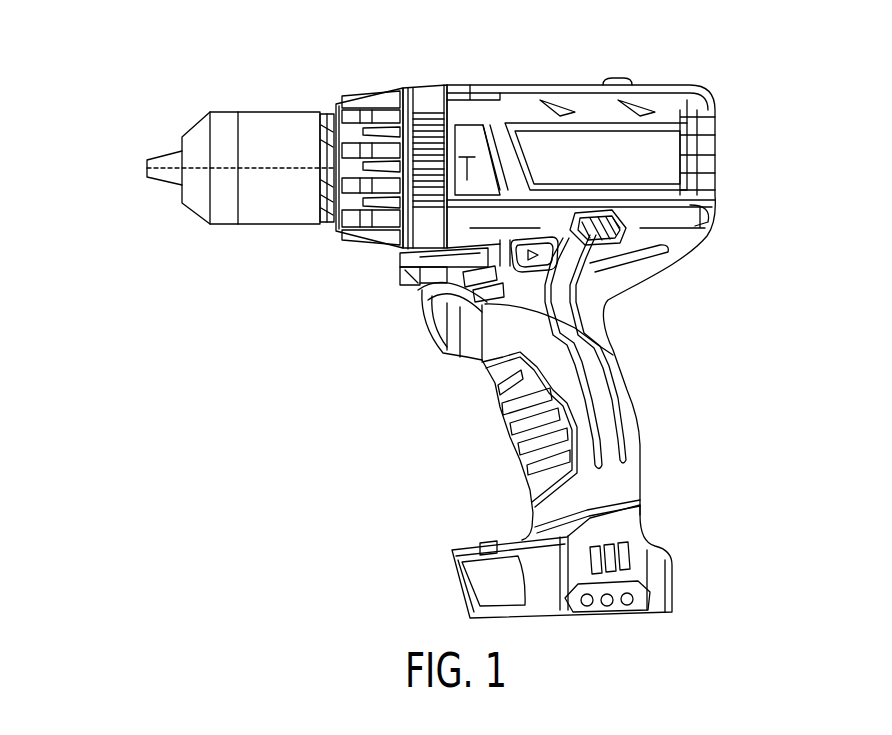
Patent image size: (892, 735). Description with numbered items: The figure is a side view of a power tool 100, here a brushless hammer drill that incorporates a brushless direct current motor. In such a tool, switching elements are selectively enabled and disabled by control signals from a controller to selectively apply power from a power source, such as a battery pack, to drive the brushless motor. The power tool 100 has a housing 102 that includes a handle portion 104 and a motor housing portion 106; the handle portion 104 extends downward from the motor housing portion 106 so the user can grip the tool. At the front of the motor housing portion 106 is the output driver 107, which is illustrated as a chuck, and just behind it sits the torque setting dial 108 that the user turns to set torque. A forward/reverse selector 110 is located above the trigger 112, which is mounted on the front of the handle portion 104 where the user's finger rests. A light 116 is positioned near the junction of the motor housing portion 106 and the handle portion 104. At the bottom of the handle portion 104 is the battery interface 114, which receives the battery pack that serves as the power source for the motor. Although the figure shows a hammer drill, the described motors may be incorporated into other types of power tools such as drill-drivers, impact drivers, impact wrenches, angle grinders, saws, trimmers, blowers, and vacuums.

The power tool 100 is at (120, 120).
The housing 102 is at (605, 232).
The handle portion 104 is at (668, 428).
The motor housing portion 106 is at (738, 130).
The output driver 107 is at (320, 78).
The torque setting dial 108 is at (372, 98).
The forward/reverse selector 110 is at (545, 257).
The trigger 112 is at (422, 337).
The battery interface 114 is at (698, 568).
The light 116 is at (400, 266).